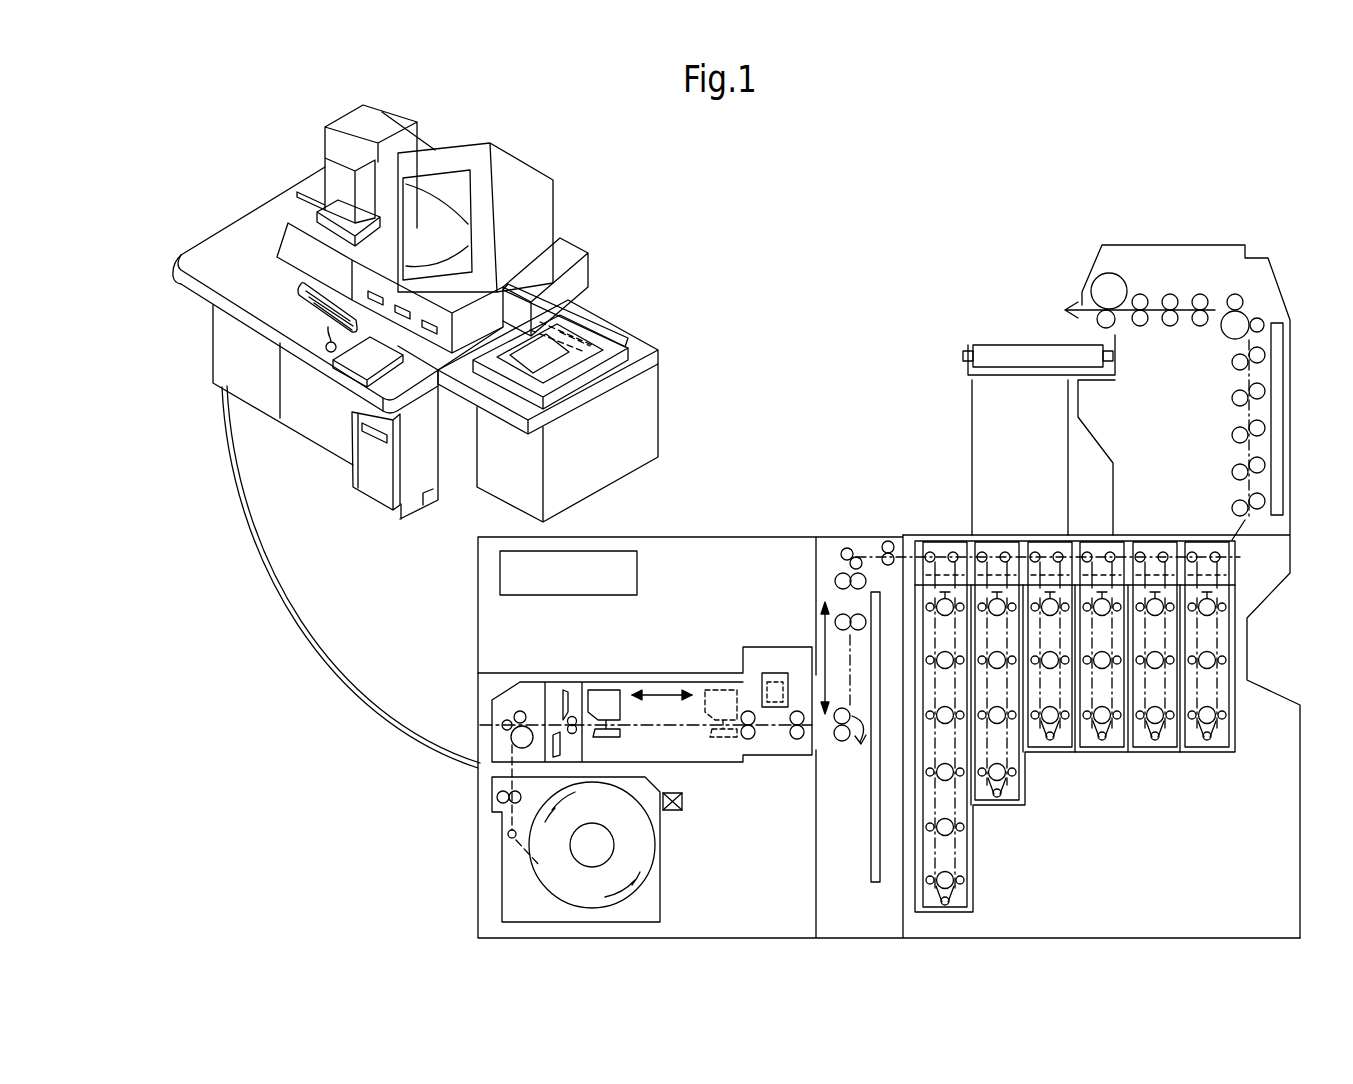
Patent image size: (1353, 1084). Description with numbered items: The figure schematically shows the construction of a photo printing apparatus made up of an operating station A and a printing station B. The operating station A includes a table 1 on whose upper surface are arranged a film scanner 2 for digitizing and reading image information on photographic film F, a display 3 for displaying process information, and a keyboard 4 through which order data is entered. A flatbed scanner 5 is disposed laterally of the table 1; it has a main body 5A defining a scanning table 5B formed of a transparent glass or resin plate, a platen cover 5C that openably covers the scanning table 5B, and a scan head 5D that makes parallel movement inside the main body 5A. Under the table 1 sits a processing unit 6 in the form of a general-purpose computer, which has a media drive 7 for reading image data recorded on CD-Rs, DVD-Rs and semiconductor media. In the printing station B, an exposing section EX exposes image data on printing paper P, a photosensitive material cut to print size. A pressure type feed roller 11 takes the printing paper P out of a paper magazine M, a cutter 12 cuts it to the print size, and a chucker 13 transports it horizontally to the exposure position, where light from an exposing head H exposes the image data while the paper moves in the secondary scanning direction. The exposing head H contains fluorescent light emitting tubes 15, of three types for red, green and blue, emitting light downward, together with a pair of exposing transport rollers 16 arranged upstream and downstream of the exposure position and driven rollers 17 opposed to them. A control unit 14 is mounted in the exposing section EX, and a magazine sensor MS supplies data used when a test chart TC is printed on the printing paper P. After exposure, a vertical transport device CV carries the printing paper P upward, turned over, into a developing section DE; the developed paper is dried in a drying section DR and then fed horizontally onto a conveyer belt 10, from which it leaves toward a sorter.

The operating station A is at (210, 214).
The table 1 is at (182, 263).
The film scanner 2 is at (330, 150).
The display 3 is at (466, 155).
The keyboard 4 is at (300, 298).
The flatbed scanner 5 is at (606, 323).
The main body 5A is at (583, 374).
The scanning table 5B is at (553, 380).
The platen cover 5C is at (583, 318).
The scan head 5D is at (632, 371).
The processing unit 6 is at (394, 510).
The media drive 7 is at (378, 455).
The photographic film F is at (314, 201).
The test chart TC is at (530, 352).
The printing station B is at (478, 836).
The exposing section EX is at (673, 533).
The conveyer belt 10 is at (1000, 345).
The pressure type feed roller 11 is at (515, 734).
The cutter 12 is at (562, 700).
The chucker 13 is at (607, 692).
The control unit 14 is at (503, 586).
The fluorescent light emitting tubes 15 is at (770, 680).
The exposing transport rollers 16 is at (746, 712).
The driven rollers 17 is at (752, 742).
The exposing head H is at (770, 672).
The paper magazine M is at (662, 880).
The magazine sensor MS is at (684, 801).
The printing paper P is at (478, 768).
The vertical transport device CV is at (888, 533).
The drying section DR is at (1222, 428).
The developing section DE is at (1143, 752).